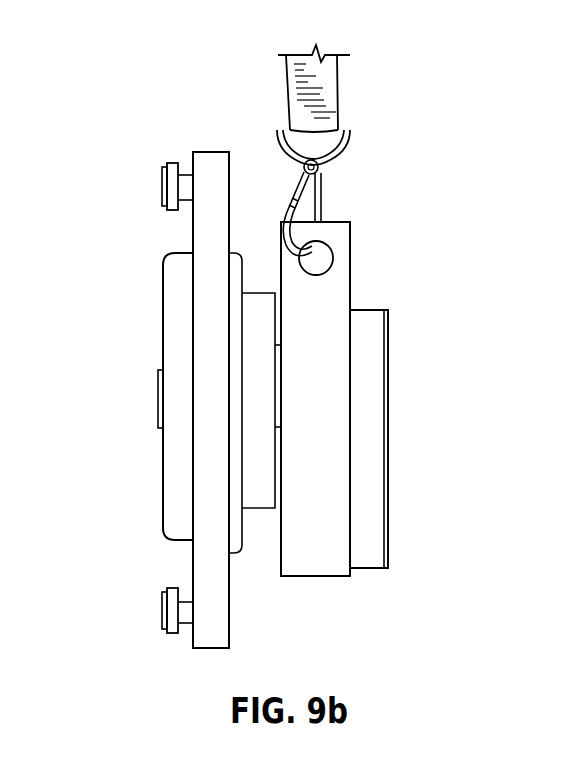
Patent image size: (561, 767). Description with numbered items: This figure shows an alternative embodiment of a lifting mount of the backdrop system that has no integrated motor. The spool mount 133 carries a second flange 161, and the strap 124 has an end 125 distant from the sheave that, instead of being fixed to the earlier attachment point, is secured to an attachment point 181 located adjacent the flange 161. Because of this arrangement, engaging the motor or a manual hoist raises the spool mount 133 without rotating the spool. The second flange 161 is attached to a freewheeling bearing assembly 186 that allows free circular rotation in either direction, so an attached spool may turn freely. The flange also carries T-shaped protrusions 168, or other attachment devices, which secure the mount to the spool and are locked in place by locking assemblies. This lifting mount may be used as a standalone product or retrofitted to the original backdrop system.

The strap 124 is at (374, 64).
The end of strap 125 is at (339, 112).
The spool mount 133 is at (129, 313).
The second flange 161 is at (128, 101).
The T-shaped protrusion 168 is at (160, 183).
The attachment point 181 is at (372, 254).
The freewheeling bearing assembly 186 is at (337, 453).